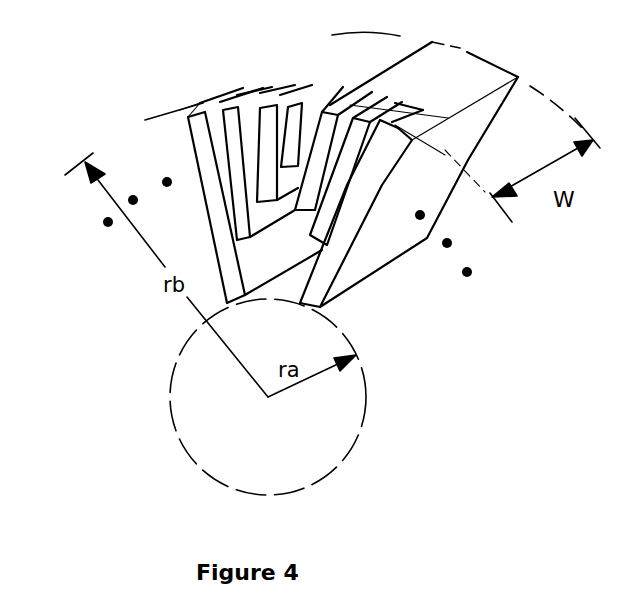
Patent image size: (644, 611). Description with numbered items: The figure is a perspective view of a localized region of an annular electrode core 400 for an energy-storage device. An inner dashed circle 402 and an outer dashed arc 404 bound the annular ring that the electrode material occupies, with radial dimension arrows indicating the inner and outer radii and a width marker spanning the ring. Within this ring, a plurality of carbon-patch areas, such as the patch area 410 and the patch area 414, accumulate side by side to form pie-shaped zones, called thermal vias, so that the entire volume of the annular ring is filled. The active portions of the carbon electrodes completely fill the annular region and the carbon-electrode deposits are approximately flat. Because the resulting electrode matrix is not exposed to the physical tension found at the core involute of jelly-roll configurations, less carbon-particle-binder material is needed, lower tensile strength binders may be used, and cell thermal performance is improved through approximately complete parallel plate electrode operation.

The annular electrode core 400 is at (95, 430).
The inner circle / rotor boundary 402 is at (168, 396).
The outer circle / stator boundary 404 is at (95, 150).
The carbon-patch area 410 is at (293, 103).
The carbon-patch area 414 is at (312, 300).